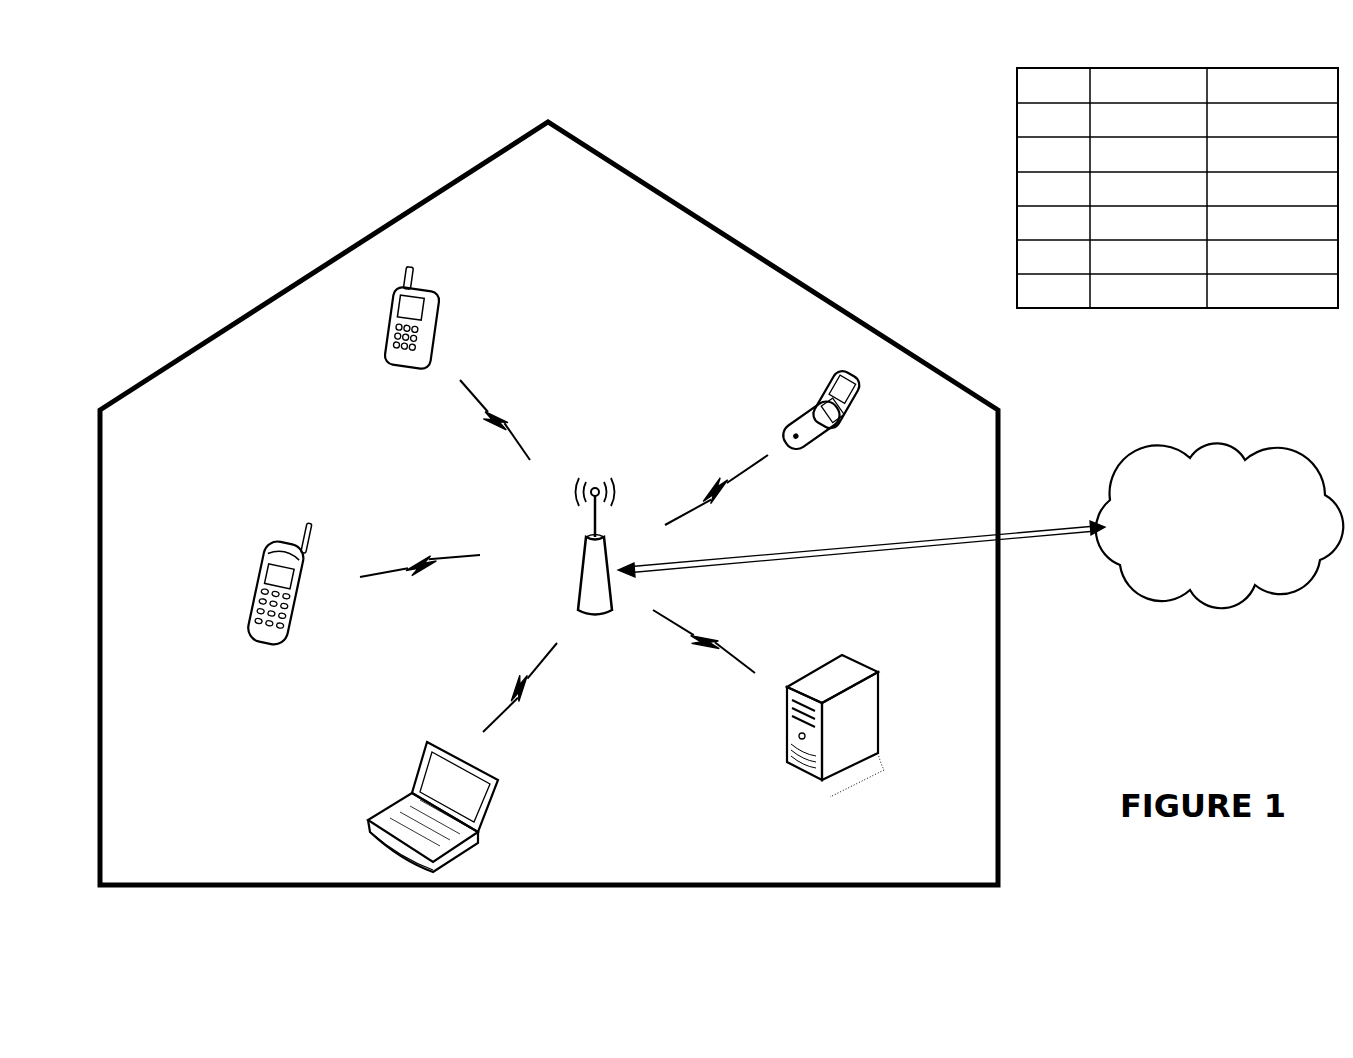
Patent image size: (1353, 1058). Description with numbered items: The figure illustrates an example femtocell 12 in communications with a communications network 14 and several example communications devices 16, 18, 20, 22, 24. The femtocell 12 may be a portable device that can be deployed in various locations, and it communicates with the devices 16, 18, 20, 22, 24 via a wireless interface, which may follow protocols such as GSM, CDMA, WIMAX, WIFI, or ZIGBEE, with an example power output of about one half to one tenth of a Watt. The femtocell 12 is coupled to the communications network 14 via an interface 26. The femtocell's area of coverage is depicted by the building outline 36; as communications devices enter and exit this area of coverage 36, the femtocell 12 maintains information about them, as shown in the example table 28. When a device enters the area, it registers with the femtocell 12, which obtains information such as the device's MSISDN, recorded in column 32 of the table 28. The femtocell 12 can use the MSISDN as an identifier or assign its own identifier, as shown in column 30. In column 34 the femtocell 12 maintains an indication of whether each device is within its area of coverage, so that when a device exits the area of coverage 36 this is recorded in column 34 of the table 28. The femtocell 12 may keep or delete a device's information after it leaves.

The femtocell 12 is at (580, 576).
The communications network 14 is at (1203, 594).
The communications device 16 is at (390, 334).
The communications device 18 is at (262, 586).
The communications device 20 is at (382, 808).
The communications device 22 is at (872, 671).
The communications device 24 is at (804, 408).
The interface 26 is at (920, 540).
The table 28 is at (1006, 190).
The column 30 is at (1062, 324).
The column 32 is at (1145, 324).
The column 34 is at (1271, 324).
The building outline 36 is at (727, 234).